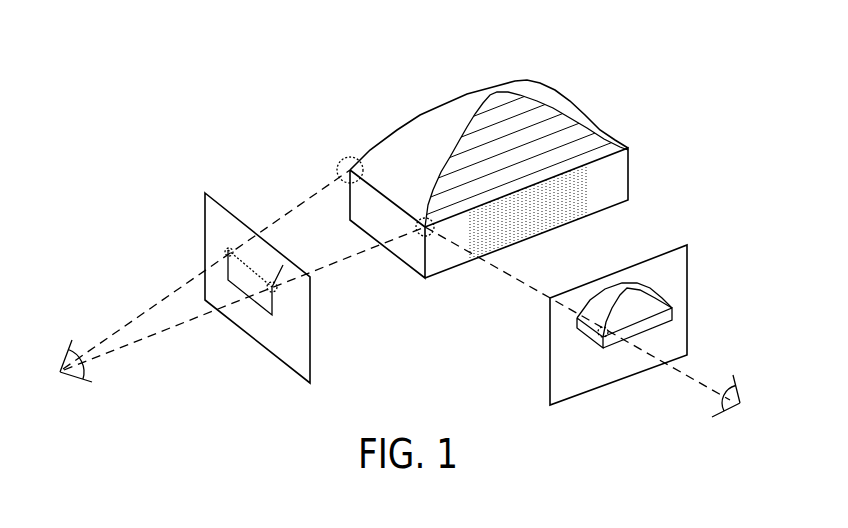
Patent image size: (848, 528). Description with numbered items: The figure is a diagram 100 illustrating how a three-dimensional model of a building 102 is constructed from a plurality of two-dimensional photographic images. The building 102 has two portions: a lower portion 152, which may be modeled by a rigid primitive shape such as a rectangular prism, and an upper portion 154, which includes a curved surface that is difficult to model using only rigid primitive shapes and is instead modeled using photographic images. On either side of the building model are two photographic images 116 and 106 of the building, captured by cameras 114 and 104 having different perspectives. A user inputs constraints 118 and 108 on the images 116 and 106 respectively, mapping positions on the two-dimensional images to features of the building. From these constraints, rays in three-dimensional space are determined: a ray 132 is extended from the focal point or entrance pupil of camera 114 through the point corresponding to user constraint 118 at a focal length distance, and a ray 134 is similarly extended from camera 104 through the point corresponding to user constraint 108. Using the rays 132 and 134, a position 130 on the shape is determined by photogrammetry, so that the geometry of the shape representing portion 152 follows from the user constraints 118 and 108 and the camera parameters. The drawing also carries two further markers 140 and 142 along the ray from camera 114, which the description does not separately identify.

The diagram 100 is at (687, 32).
The three-dimensional building 102 is at (627, 201).
The camera 104 is at (741, 405).
The photographic image 106 is at (690, 272).
The user constraint 108 is at (598, 334).
The camera 114 is at (62, 374).
The photographic image 116 is at (205, 210).
The user constraint 118 is at (277, 288).
The position on the shape 130 is at (421, 217).
The ray 132 is at (174, 330).
The ray 134 is at (517, 283).
The reference point 140 is at (229, 246).
The reference point 142 is at (343, 158).
The portion 152 is at (637, 148).
The portion 154 is at (637, 68).